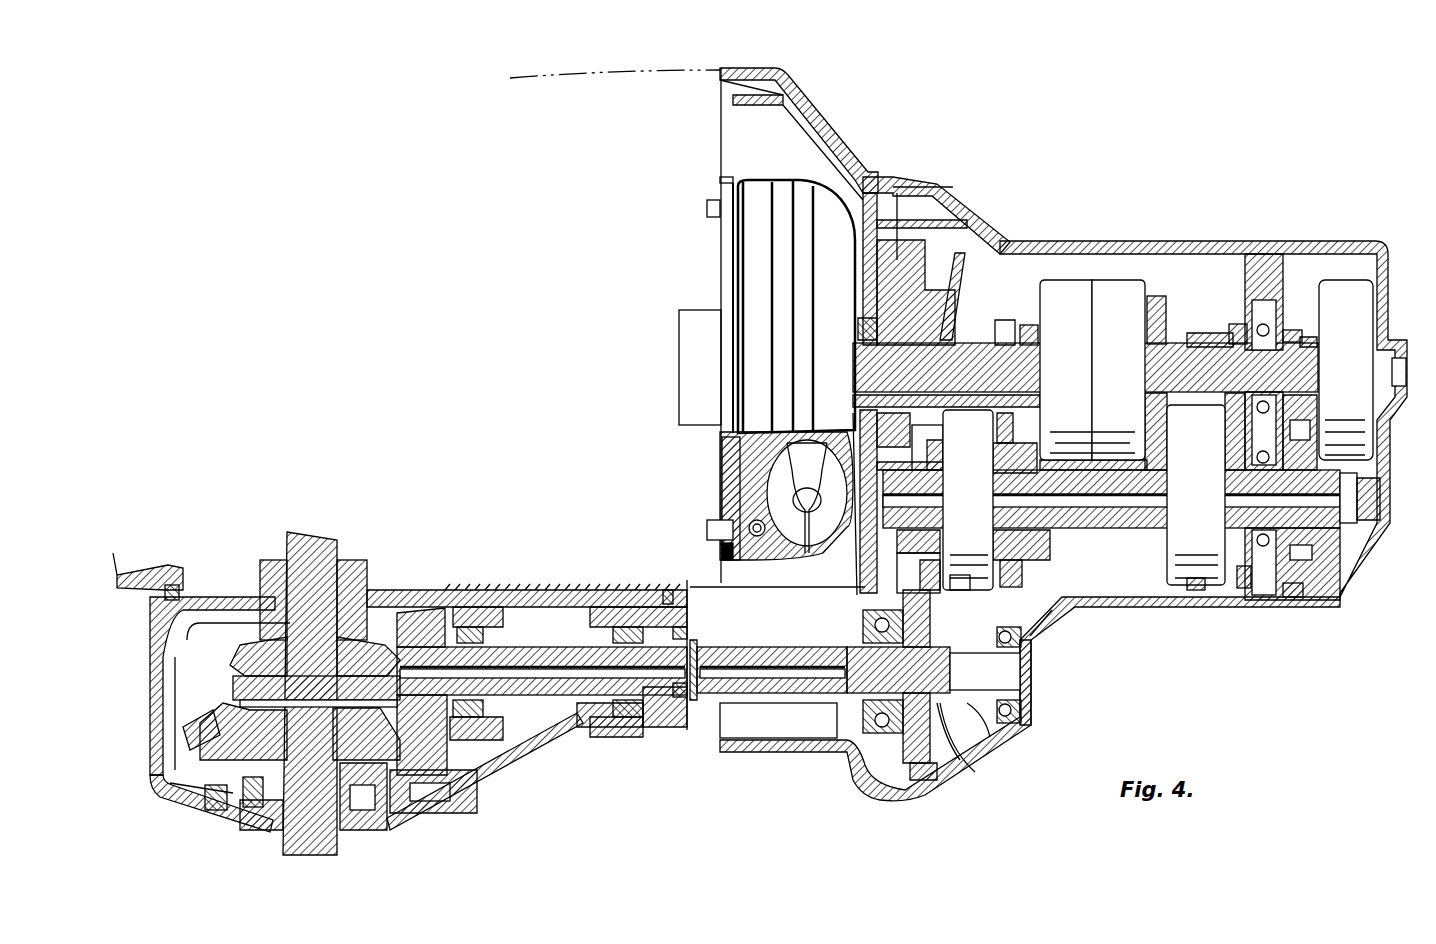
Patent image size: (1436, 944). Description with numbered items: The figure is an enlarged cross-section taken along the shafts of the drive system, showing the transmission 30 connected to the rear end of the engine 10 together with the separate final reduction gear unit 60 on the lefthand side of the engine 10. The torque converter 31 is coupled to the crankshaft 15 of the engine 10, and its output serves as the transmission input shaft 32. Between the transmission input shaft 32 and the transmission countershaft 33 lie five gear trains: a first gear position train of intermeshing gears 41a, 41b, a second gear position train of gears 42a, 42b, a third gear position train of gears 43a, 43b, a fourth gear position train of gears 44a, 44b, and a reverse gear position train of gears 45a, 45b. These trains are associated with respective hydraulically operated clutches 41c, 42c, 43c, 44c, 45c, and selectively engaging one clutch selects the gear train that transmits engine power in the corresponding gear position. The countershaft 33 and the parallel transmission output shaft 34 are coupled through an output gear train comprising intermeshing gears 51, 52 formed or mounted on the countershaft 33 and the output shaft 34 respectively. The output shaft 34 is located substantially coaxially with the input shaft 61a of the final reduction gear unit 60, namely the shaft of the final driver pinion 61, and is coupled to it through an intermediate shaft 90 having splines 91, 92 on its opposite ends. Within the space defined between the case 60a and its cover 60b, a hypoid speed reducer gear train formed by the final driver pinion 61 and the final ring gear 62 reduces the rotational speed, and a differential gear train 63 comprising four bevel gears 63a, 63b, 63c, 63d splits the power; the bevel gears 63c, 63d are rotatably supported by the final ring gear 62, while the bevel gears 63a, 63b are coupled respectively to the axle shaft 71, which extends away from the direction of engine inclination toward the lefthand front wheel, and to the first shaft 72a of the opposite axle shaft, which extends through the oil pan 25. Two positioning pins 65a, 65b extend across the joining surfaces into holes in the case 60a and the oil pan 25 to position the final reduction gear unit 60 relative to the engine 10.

The engine 10 is at (598, 70).
The crankshaft 15 is at (690, 290).
The oil pan 25 is at (150, 592).
The transmission 30 is at (1140, 212).
The torque converter 31 is at (762, 192).
The transmission input shaft 32 is at (1199, 357).
The transmission countershaft 33 is at (1100, 513).
The transmission output shaft 34 is at (997, 740).
The first gear position gear 41a is at (1298, 328).
The first gear position gear 41b is at (1297, 598).
The hydraulically operated clutch 41c is at (1360, 315).
The second gear position gear 42a is at (1030, 323).
The second gear position gear 42b is at (1010, 580).
The hydraulically operated clutch 42c is at (1062, 290).
The third gear position gear 43a is at (990, 300).
The third gear position gear 43b is at (1007, 568).
The hydraulically operated clutch 43c is at (960, 582).
The fourth gear position gear 44a is at (1165, 292).
The fourth gear position gear 44b is at (1167, 580).
The hydraulically operated clutch 44c is at (1118, 290).
The reverse gear position gear 45a is at (1237, 322).
The reverse gear position gear 45b is at (1240, 588).
The hydraulically operated clutch 45c is at (1197, 585).
The output gear 51 is at (862, 560).
The output gear 52 is at (942, 763).
The final reduction gear unit 60 is at (137, 800).
The case 60a is at (152, 733).
The cover 60b is at (235, 805).
The final driver pinion 61 is at (423, 630).
The input shaft 61a is at (565, 695).
The final ring gear 62 is at (437, 760).
The differential gear train 63 is at (237, 677).
The bevel gear 63a is at (247, 640).
The bevel gear 63b is at (243, 775).
The bevel gear 63c is at (230, 717).
The bevel gear 63d is at (387, 805).
The positioning pin 65a is at (663, 590).
The positioning pin 65b is at (172, 583).
The axle shaft 71 is at (290, 840).
The first shaft 72a is at (330, 550).
The intermediate shaft 90 is at (762, 657).
The spline 91 is at (933, 670).
The spline 92 is at (697, 690).